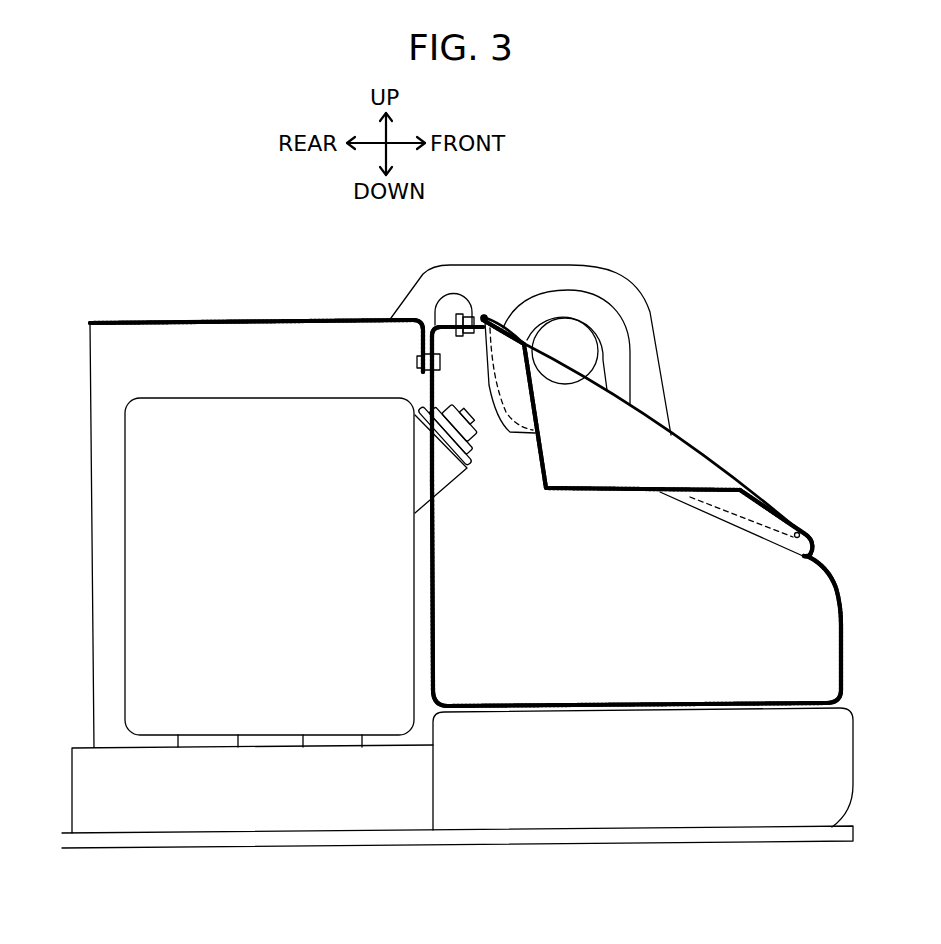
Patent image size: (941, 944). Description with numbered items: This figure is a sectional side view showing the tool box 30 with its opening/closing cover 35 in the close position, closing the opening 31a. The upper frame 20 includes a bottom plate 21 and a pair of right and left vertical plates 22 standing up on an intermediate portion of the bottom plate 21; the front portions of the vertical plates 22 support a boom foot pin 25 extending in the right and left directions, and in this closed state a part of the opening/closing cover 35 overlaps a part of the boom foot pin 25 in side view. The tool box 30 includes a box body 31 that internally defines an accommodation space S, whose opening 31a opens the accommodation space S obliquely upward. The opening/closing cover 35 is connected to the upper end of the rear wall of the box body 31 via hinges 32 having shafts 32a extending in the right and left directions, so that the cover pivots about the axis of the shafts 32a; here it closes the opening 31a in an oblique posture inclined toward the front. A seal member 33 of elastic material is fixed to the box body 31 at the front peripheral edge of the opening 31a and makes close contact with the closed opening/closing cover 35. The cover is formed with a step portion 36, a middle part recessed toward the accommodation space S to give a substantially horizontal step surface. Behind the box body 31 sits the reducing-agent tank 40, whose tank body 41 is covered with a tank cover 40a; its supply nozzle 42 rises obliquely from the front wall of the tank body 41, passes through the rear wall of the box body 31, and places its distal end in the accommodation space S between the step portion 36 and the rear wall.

The upper frame 20 is at (866, 773).
The bottom plate 21 is at (853, 832).
The vertical plate 22 is at (548, 265).
The boom foot pin 25 is at (600, 330).
The tool box 30 is at (748, 427).
The box body 31 is at (845, 605).
The opening 31a is at (794, 522).
The hinge 32 is at (482, 314).
The shaft 32a is at (485, 314).
The seal member 33 is at (764, 506).
The opening/closing cover 35 is at (707, 457).
The step portion 36 is at (598, 482).
The reducing-agent tank 40 is at (198, 385).
The tank cover 40a is at (275, 320).
The tank body 41 is at (275, 398).
The supply nozzle 42 is at (492, 428).
The accommodation space S is at (630, 617).